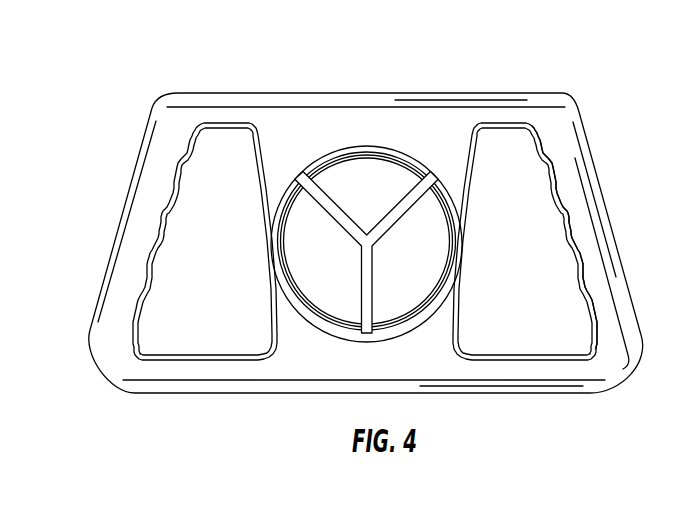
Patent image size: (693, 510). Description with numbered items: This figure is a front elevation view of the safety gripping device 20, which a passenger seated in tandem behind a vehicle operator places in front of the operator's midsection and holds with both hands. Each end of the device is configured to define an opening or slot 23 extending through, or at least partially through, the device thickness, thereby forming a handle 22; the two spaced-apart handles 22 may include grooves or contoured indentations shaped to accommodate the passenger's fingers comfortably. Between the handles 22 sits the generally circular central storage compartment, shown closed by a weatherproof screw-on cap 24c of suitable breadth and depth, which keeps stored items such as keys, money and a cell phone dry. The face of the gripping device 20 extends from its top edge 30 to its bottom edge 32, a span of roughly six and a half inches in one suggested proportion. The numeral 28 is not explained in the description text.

The safety gripping device 20 is at (595, 55).
The handle 22 is at (120, 287).
The slot 23 is at (201, 323).
The screw-on cap 24c is at (387, 187).
The contoured edge 28 is at (588, 307).
The top edge 30 is at (390, 94).
The bottom edge 32 is at (240, 386).